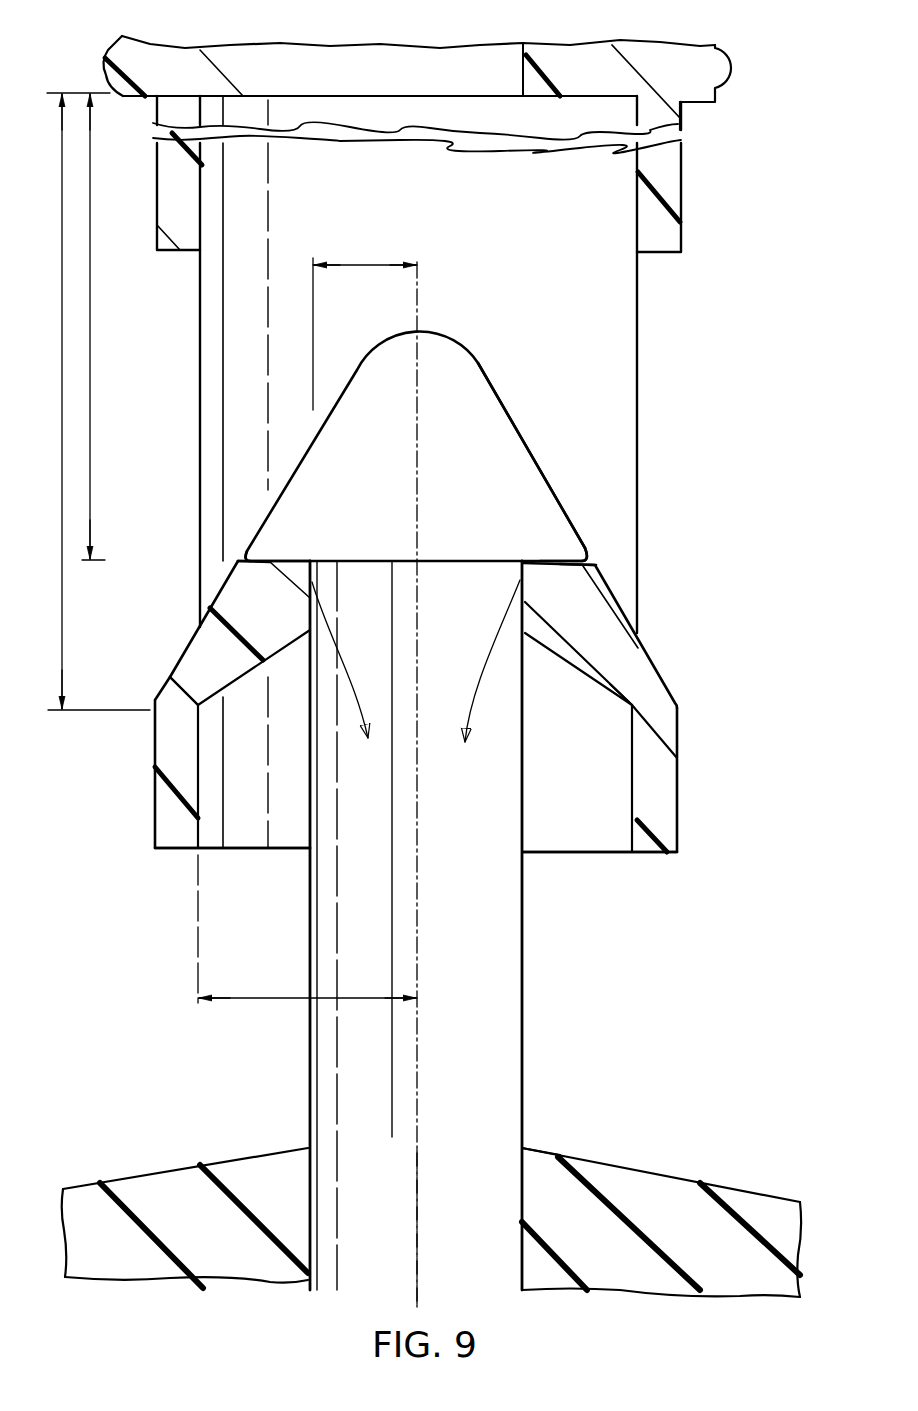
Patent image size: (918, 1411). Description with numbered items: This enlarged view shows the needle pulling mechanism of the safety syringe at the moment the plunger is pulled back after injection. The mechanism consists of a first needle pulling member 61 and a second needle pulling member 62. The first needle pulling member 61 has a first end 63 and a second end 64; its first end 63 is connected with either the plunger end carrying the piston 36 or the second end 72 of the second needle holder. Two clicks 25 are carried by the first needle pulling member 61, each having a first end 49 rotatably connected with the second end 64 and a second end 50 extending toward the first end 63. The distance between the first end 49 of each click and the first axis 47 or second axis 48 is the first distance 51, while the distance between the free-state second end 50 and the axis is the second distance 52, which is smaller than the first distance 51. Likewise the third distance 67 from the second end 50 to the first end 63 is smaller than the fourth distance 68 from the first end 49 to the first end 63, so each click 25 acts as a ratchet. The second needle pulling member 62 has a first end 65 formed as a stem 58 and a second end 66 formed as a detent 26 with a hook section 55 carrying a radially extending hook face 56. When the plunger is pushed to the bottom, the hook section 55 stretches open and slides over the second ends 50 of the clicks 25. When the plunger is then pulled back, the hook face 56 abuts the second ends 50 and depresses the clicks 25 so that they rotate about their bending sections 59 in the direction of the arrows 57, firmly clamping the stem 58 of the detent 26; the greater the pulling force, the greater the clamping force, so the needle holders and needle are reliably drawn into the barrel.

The click 25 is at (205, 643).
The detent 26 is at (499, 456).
The piston 36 is at (738, 1203).
The first axis 47 is at (417, 1227).
The second axis 48 is at (418, 437).
The first end of click 49 is at (172, 714).
The second end of click 50 is at (291, 556).
The first distance 51 is at (275, 1000).
The second distance 52 is at (371, 262).
The hook section 55 is at (560, 551).
The hook face 56 is at (253, 567).
The arrow 57 is at (350, 625).
The stem 58 is at (523, 997).
The bending section 59 is at (200, 705).
The first needle pulling member 61 is at (668, 372).
The second needle pulling member 62 is at (569, 385).
The first end of first needle pulling member 63 is at (244, 90).
The second end of first needle pulling member 64 is at (272, 854).
The first end of second needle pulling member 65 is at (524, 1147).
The second end of second needle pulling member 66 is at (469, 333).
The third distance 67 is at (92, 355).
The fourth distance 68 is at (63, 600).
The second end of second needle holder 72 is at (130, 104).